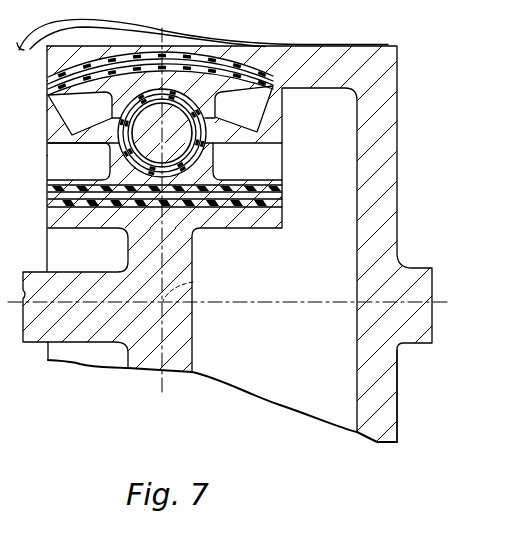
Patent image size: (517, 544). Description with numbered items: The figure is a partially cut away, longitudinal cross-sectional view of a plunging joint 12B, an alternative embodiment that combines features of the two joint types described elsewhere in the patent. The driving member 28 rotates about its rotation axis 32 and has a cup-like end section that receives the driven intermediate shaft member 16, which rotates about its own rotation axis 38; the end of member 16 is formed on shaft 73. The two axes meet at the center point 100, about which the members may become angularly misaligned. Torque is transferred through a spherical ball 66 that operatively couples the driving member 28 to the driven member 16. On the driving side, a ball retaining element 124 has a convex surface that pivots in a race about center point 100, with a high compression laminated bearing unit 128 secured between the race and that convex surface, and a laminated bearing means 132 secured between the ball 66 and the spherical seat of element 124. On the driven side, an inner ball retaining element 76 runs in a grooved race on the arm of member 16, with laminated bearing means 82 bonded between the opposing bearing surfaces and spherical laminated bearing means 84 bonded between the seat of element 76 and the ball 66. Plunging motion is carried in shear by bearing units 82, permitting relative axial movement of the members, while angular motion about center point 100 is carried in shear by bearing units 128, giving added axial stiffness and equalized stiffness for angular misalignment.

The joint 12B is at (399, 66).
The laminated bearing unit 128 is at (241, 92).
The laminated bearing means 132 is at (107, 106).
The ball retaining element 124 is at (260, 120).
The spherical ball 66 is at (140, 132).
The spherical laminated bearing means 84 is at (206, 132).
The inner ball retaining element 76 is at (273, 158).
The laminated bearing means 82 is at (283, 198).
The shaft 73 is at (44, 271).
The rotation axis 38 is at (82, 298).
The center point 100 is at (193, 282).
The rotation axis 32 is at (329, 302).
The intermediate shaft member 16 is at (42, 343).
The driving member 28 is at (401, 345).